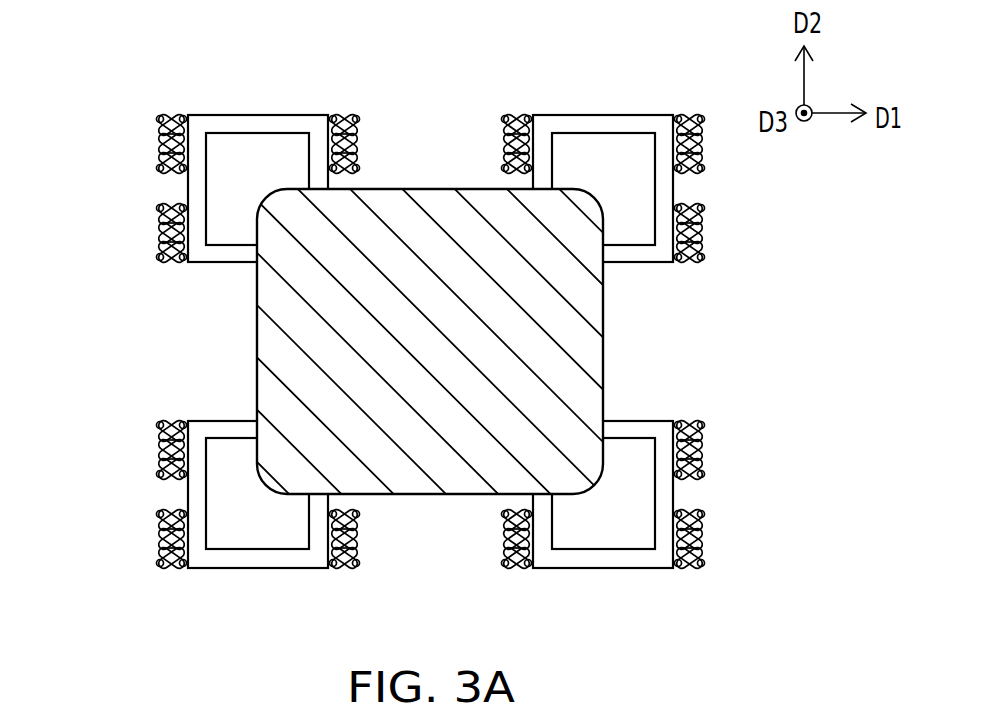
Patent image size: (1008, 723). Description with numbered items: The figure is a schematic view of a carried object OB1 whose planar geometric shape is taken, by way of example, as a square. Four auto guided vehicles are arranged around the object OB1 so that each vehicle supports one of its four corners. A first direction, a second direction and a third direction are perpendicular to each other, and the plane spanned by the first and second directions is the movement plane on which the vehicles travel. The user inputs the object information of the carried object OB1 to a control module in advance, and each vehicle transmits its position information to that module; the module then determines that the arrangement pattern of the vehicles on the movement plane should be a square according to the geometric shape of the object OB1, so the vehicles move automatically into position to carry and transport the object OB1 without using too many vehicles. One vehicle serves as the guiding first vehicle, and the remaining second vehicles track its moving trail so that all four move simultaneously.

The carried object OB1 is at (437, 188).